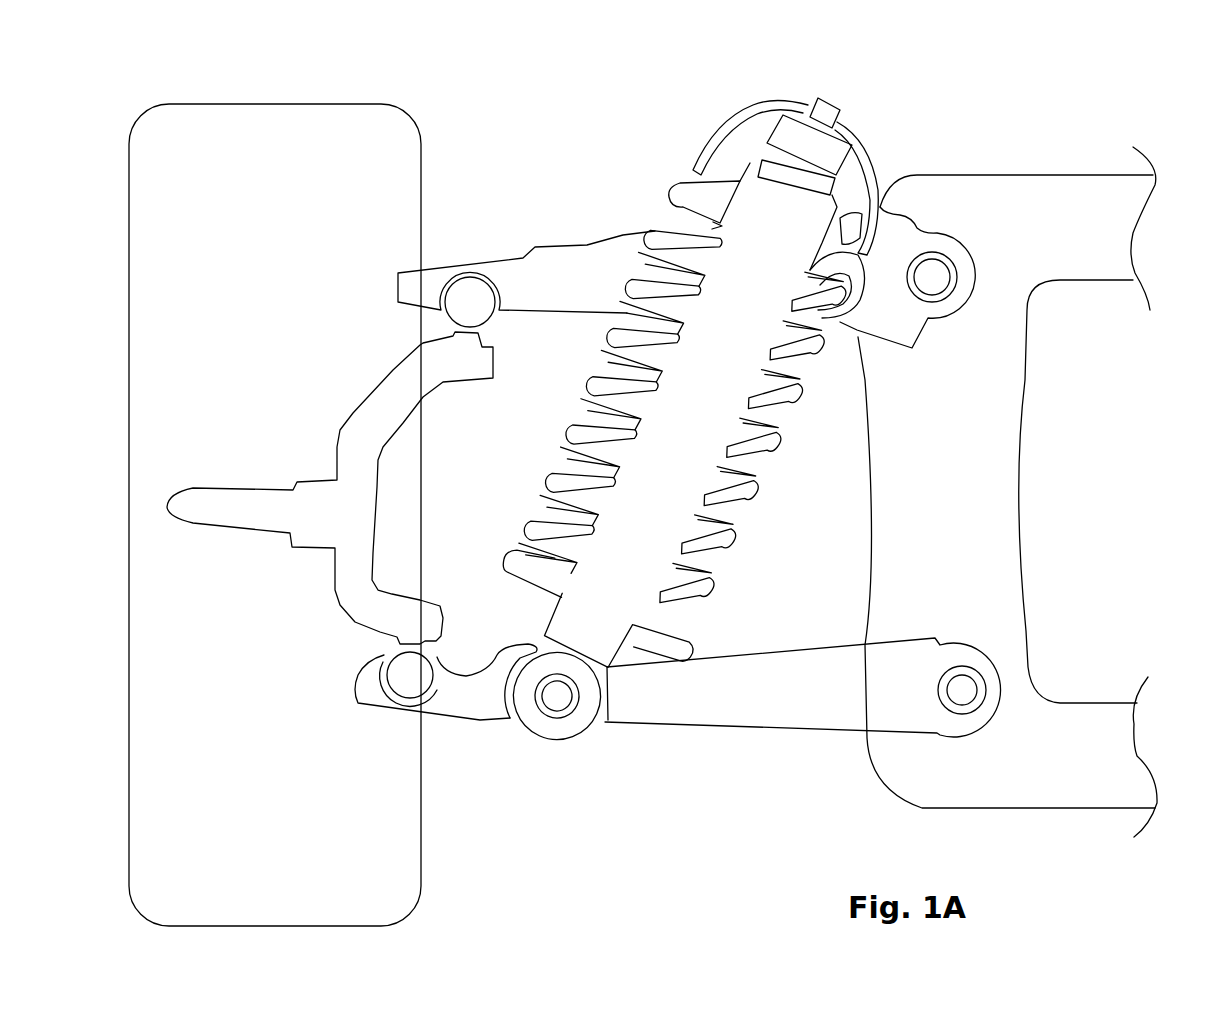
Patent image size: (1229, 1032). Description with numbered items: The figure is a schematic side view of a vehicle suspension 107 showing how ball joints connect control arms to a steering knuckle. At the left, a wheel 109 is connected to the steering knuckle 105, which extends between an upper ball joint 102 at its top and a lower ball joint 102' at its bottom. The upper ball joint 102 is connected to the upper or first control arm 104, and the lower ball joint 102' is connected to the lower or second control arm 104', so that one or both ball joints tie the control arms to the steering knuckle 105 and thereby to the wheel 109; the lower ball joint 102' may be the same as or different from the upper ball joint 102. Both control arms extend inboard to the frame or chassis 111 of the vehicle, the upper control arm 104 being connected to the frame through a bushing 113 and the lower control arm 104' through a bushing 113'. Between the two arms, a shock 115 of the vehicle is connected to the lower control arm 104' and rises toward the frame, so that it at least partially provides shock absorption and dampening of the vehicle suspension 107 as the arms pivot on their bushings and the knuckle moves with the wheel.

The vehicle suspension 107 is at (918, 65).
The wheel 109 is at (343, 175).
The upper ball joint 102 is at (497, 233).
The lower ball joint 102' is at (446, 744).
The upper control arm 104 is at (538, 212).
The lower control arm 104' is at (803, 741).
The steering knuckle 105 is at (382, 420).
The frame or chassis 111 is at (976, 489).
The bushing 113 is at (950, 207).
The bushing 113' is at (1046, 664).
The shock 115 is at (672, 447).